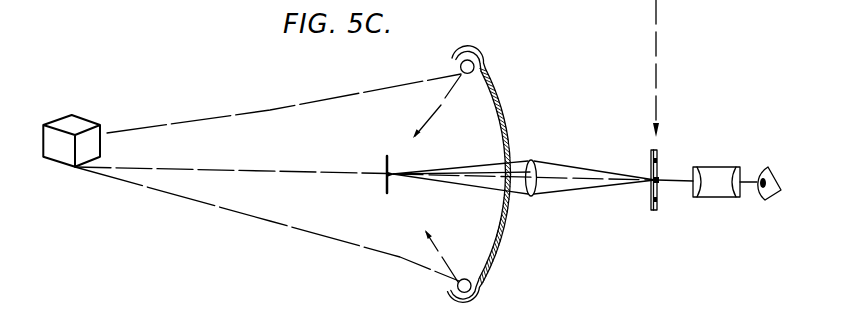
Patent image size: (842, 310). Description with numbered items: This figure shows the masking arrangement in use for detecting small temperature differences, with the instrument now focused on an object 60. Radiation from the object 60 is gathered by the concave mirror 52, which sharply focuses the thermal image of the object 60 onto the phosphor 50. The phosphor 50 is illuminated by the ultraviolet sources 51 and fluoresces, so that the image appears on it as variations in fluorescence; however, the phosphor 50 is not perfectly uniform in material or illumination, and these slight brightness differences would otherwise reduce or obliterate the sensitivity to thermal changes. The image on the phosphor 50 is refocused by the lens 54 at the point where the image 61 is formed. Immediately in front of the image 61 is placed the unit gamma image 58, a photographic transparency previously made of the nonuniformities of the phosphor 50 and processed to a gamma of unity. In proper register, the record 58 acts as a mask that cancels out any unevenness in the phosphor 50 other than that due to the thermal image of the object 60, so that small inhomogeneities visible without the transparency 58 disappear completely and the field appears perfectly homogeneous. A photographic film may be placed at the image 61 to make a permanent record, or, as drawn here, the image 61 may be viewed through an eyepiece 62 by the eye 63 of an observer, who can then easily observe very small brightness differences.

The phosphor 50 is at (384, 160).
The ultraviolet sources 51 is at (460, 67).
The concave mirror 52 is at (502, 101).
The lens 54 is at (533, 160).
The unit gamma image 58 is at (657, 210).
The object 60 is at (83, 122).
The image 61 is at (659, 177).
The eyepiece 62 is at (718, 167).
The eye 63 is at (768, 168).